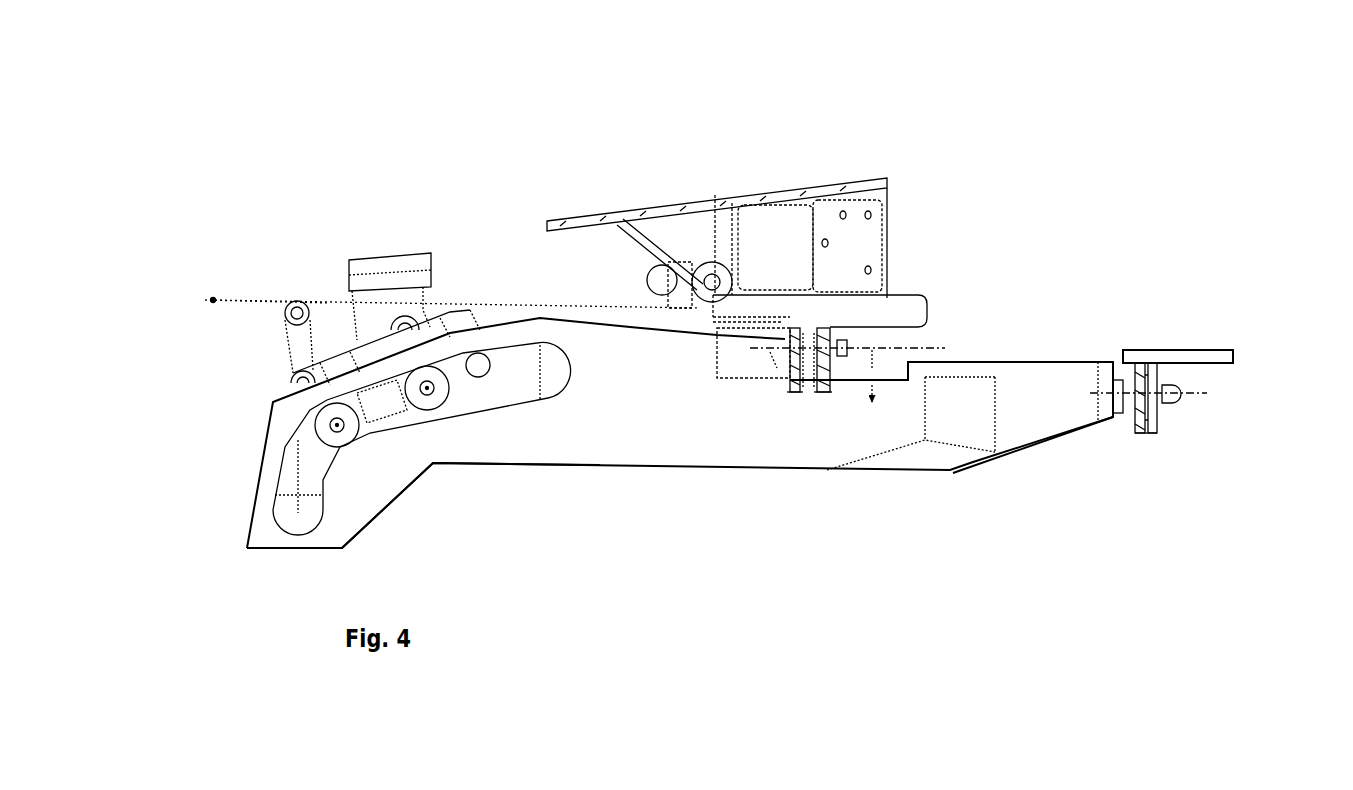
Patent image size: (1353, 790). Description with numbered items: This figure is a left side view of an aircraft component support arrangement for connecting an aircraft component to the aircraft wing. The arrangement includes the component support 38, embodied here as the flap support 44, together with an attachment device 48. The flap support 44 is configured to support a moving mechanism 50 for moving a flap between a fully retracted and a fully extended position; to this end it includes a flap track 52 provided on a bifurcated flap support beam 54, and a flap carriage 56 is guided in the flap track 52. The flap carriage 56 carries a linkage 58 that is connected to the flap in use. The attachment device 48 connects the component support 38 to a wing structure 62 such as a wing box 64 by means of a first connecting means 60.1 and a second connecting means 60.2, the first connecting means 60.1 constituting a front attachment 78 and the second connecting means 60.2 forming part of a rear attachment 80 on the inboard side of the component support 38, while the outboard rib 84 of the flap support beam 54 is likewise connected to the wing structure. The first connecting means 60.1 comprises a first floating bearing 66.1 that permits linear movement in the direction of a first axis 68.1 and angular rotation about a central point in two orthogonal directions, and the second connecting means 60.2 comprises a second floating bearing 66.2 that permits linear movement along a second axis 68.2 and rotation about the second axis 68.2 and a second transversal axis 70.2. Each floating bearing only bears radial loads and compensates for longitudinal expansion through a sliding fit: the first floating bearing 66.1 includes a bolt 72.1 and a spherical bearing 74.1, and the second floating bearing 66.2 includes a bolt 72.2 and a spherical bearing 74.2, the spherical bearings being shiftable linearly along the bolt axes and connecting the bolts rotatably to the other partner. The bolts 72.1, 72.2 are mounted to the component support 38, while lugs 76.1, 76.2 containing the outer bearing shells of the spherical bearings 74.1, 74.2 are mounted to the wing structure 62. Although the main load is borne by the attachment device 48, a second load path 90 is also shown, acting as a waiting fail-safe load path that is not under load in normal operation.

The component support 38 is at (661, 426).
The flap support 44 is at (661, 426).
The attachment device 48 is at (999, 413).
The moving mechanism 50 is at (208, 267).
The flap track 52 is at (298, 460).
The flap support beam 54 is at (1023, 428).
The flap carriage 56 is at (285, 385).
The linkage 58 is at (360, 267).
The first connecting means 60.1 is at (1177, 371).
The second connecting means 60.2 is at (800, 423).
The wing structure 62 is at (890, 210).
The wing box 64 is at (787, 185).
The first floating bearing 66.1 is at (1190, 379).
The second floating bearing 66.2 is at (820, 395).
The first axis 68.1 is at (1147, 437).
The second axis 68.2 is at (757, 387).
The second transversal axis 70.2 is at (787, 393).
The bolt 72.1 is at (1180, 403).
The bolt 72.2 is at (845, 340).
The spherical bearing 74.1 is at (1178, 387).
The spherical bearing 74.2 is at (820, 340).
The lug 76.1 is at (1140, 373).
The lug 76.2 is at (803, 347).
The front attachment 78 is at (1202, 445).
The rear attachment 80 is at (820, 390).
The outboard rib 84 is at (503, 445).
The second load path 90 is at (682, 257).